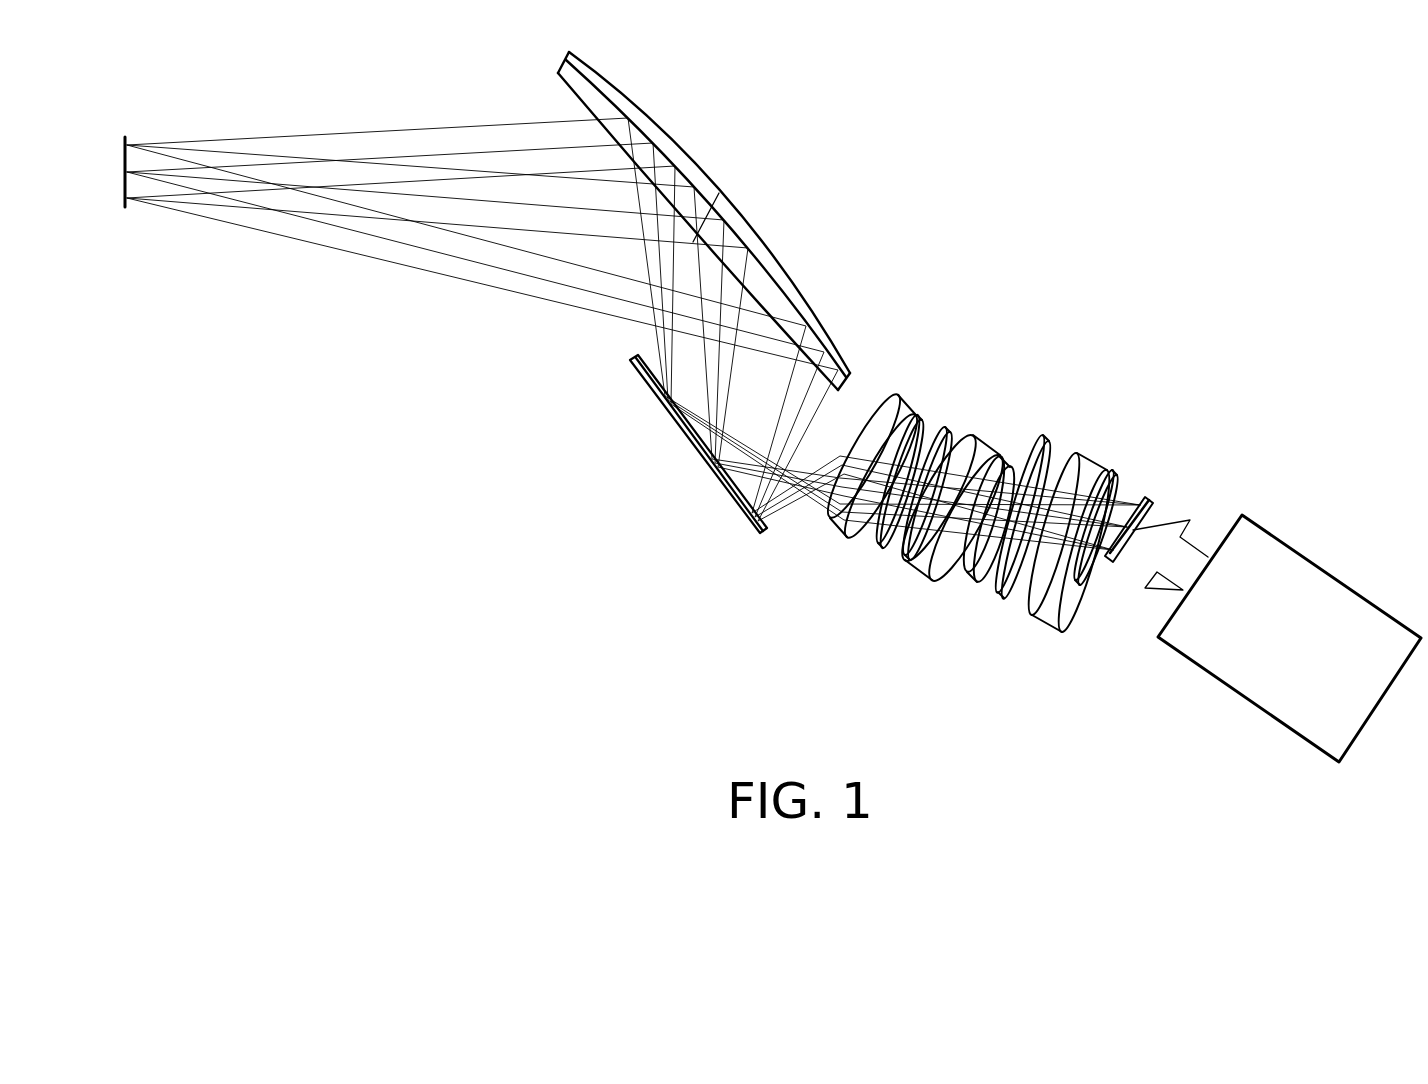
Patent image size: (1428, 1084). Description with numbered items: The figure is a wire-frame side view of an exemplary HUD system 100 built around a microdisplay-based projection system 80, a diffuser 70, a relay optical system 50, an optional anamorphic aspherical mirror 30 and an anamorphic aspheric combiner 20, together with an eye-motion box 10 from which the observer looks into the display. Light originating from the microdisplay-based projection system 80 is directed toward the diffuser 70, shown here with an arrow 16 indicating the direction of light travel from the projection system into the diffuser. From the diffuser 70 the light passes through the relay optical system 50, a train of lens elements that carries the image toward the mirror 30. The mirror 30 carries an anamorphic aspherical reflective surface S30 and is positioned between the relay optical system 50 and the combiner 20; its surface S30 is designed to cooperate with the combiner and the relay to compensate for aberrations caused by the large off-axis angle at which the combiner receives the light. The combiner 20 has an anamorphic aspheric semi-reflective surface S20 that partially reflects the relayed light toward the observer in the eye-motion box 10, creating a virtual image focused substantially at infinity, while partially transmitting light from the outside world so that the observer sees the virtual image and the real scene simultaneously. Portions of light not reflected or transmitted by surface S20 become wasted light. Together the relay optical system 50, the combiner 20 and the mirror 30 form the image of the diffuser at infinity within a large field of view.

The HUD system 100 is at (1088, 146).
The eye-motion box 10 is at (124, 158).
The anamorphic aspheric combiner 20 is at (704, 221).
The anamorphic aspheric semi-reflective surface S20 is at (686, 180).
The anamorphic aspherical mirror 30 is at (678, 456).
The anamorphic aspherical reflective surface S30 is at (738, 484).
The relay optical system 50 is at (1128, 464).
The diffuser 70 is at (1147, 488).
The light direction arrow 16 is at (1135, 572).
The microdisplay-based projection system 80 is at (1267, 527).